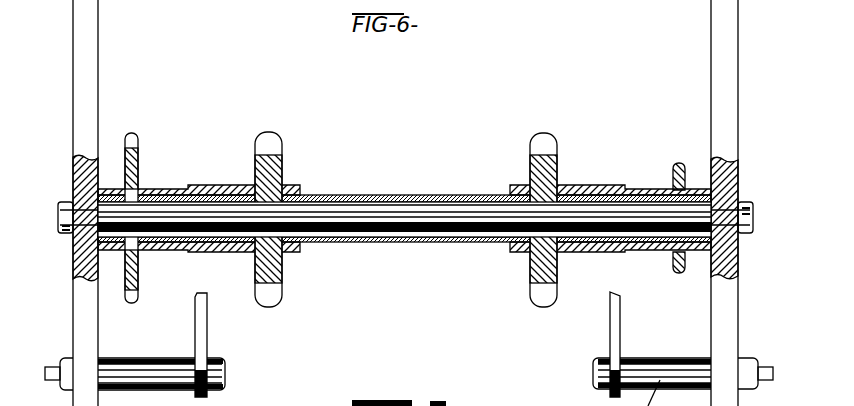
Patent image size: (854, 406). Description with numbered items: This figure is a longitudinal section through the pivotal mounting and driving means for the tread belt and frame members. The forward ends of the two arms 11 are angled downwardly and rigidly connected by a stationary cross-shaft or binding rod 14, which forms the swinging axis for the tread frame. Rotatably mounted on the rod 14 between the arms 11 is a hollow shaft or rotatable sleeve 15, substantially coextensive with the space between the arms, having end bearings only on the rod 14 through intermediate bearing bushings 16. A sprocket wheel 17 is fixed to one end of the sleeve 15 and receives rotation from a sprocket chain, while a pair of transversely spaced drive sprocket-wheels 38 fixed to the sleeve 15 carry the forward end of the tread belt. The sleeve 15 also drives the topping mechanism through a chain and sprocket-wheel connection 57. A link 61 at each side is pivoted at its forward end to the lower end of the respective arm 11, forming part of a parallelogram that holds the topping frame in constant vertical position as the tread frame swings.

The arm 11 is at (90, 50).
The binding rod 14 is at (397, 218).
The rotatable sleeve 15 is at (347, 195).
The bearing bushing 16 is at (140, 248).
The sprocket wheel 17 is at (138, 163).
The drive sprocket-wheel 38 is at (275, 162).
The chain and sprocket-wheel connection 57 is at (678, 163).
The link 61 is at (200, 328).